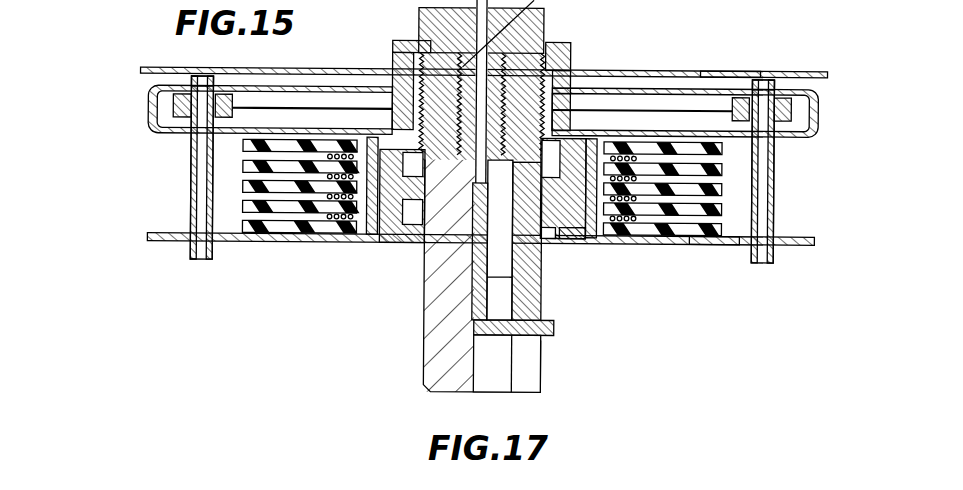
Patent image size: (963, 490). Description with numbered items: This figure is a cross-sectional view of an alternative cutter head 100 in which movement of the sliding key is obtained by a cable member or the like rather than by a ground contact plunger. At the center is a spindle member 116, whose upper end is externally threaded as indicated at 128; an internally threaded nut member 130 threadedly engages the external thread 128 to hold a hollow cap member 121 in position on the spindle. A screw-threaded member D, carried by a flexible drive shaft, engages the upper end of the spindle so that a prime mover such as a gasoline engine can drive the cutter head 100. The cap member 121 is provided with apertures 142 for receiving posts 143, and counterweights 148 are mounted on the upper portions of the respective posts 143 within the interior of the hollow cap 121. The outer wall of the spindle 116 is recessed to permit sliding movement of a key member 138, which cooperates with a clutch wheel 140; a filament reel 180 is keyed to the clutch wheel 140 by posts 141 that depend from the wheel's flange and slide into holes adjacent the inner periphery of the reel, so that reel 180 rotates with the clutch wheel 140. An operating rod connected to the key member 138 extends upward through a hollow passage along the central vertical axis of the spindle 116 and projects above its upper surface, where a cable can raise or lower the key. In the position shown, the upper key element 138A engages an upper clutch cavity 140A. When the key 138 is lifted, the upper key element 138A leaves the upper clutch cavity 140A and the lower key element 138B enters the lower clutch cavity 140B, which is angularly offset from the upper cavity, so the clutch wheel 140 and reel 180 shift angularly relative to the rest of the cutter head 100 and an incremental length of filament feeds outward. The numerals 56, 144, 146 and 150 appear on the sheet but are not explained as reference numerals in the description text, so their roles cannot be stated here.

In FIG. 15, the element of FIG. 15 56 is at (132, 11).
In FIG. 17, the cutter head 100 is at (312, 317).
In FIG. 17, the spindle member 116 is at (425, 303).
In FIG. 17, the hollow cap member 121 is at (301, 82).
In FIG. 17, the external thread 128 is at (392, 42).
In FIG. 17, the nut member 130 is at (568, 52).
In FIG. 17, the key member 138 is at (542, 300).
In FIG. 17, the upper key element 138A is at (553, 158).
In FIG. 17, the lower key element 138B is at (545, 240).
In FIG. 17, the clutch wheel 140 is at (368, 238).
In FIG. 17, the upper clutch cavity 140A is at (592, 140).
In FIG. 17, the lower clutch cavity 140B is at (588, 245).
In FIG. 17, the posts 141 is at (330, 222).
In FIG. 17, the apertures 142 is at (192, 84).
In FIG. 17, the posts 143 is at (190, 182).
In FIG. 17, the plate 144 is at (730, 72).
In FIG. 17, the top plate 146 is at (140, 70).
In FIG. 17, the counterweights 148 is at (176, 114).
In FIG. 17, the bottom plate 150 is at (808, 247).
In FIG. 17, the filament reel 180 is at (708, 245).
In FIG. 17, the screw-threaded member D is at (548, 25).